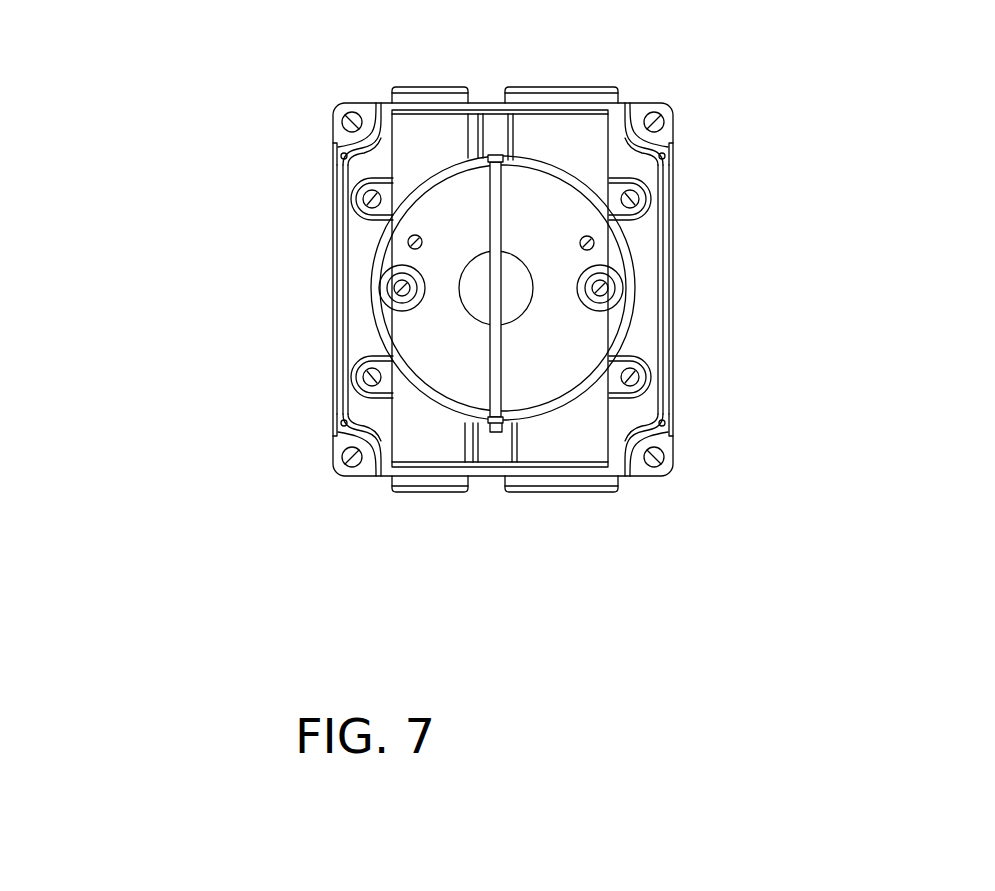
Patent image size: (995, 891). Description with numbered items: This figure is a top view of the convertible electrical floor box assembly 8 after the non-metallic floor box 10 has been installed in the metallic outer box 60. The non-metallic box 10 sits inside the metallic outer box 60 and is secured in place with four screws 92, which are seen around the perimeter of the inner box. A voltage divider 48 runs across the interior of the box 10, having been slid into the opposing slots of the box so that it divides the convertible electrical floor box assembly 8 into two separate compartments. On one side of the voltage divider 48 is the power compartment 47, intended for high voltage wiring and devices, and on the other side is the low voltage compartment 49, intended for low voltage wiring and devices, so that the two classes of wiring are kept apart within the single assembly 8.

The convertible electrical floor box assembly 8 is at (117, 41).
The non-metallic floor box 10 is at (355, 266).
The power compartment 47 is at (469, 368).
The voltage divider 48 is at (500, 218).
The low voltage compartment 49 is at (588, 371).
The metallic outer box 60 is at (694, 270).
The screws 92 is at (372, 195).